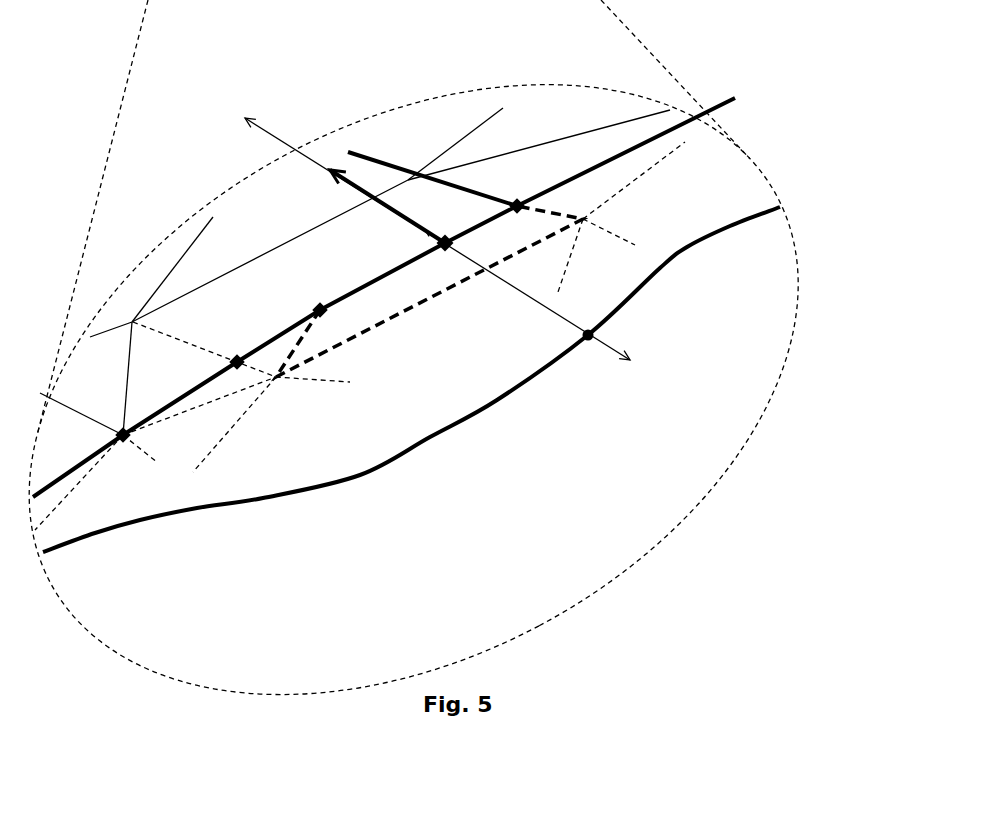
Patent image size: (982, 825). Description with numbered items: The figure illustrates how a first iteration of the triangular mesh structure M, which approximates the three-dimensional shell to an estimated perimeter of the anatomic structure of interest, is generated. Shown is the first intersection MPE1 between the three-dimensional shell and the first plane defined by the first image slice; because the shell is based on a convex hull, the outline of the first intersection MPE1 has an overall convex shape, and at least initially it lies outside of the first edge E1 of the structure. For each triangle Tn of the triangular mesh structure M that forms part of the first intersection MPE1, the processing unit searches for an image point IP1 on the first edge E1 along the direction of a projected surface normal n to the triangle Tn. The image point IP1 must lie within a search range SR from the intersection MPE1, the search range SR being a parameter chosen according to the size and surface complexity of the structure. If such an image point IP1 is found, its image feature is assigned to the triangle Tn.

The first intersection MPE1 is at (457, 297).
The first edge E1 is at (411, 416).
The search range SR is at (438, 241).
The projected surface normal n is at (366, 206).
The triangle Tn is at (441, 133).
The image point IP1 is at (585, 336).
The triangular mesh structure M is at (240, 258).